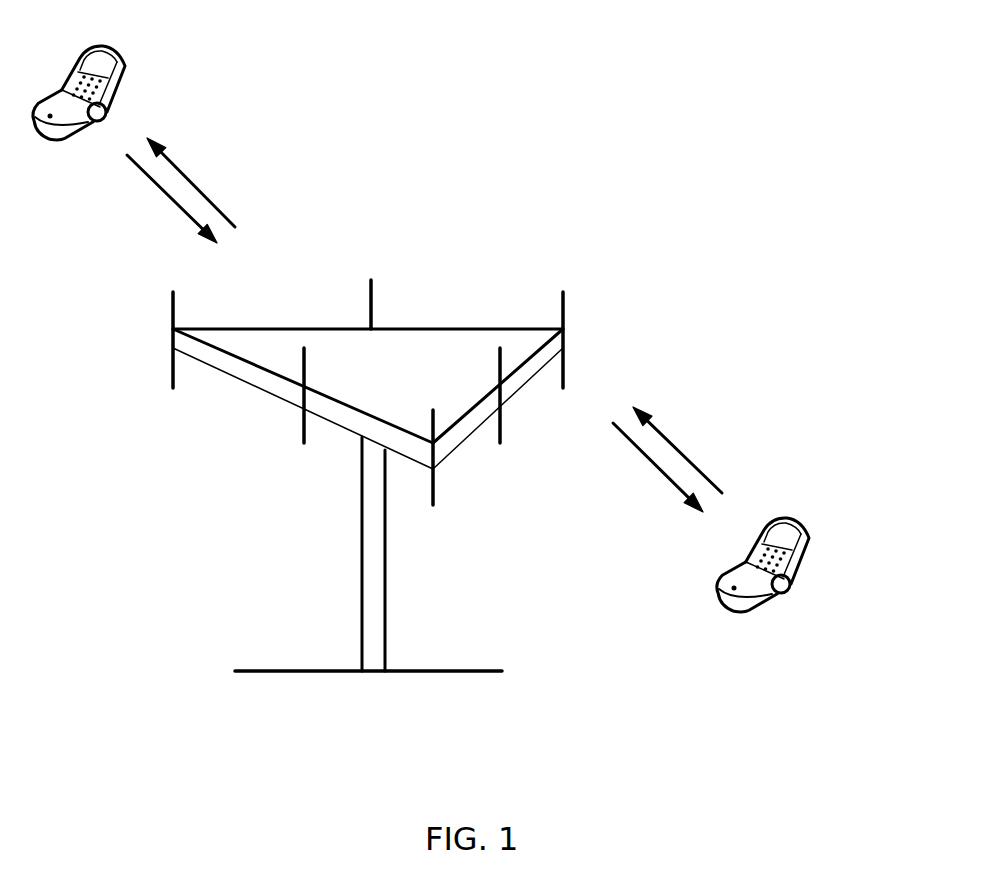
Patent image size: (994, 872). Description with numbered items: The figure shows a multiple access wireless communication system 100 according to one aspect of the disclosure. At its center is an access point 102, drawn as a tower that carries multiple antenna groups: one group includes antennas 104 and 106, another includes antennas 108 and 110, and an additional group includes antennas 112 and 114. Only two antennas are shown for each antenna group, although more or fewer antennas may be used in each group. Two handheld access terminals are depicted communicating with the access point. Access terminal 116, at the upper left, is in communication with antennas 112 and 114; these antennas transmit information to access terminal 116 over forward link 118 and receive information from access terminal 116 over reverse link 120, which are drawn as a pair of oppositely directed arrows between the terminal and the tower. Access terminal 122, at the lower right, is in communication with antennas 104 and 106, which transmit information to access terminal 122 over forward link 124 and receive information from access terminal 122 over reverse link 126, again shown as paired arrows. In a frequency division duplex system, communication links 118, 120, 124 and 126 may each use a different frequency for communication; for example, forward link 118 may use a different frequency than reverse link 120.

The multiple access wireless communication system 100 is at (650, 67).
The access point 102 is at (372, 673).
The antenna 104 is at (566, 300).
The antenna 106 is at (502, 443).
The antenna 108 is at (435, 505).
The antenna 110 is at (303, 443).
The antenna 112 is at (176, 297).
The antenna 114 is at (372, 285).
The access terminal 116 is at (110, 48).
The forward link 118 is at (188, 183).
The reverse link 120 is at (172, 197).
The access terminal 122 is at (798, 523).
The forward link 124 is at (658, 472).
The reverse link 126 is at (680, 452).